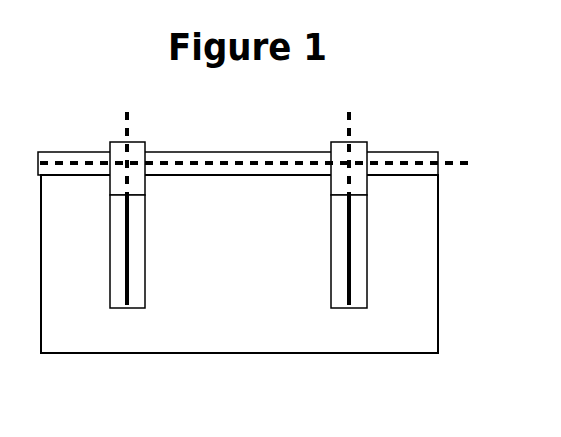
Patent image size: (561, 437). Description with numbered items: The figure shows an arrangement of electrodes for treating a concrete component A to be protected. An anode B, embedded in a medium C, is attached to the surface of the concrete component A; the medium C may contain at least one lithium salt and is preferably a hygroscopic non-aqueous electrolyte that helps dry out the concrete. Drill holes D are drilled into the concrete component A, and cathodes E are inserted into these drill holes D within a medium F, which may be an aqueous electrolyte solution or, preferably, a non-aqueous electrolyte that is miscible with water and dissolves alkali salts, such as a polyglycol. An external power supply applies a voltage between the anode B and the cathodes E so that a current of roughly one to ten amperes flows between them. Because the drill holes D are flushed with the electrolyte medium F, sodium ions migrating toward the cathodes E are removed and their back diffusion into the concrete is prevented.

The concrete component A is at (239, 264).
The anode B is at (273, 159).
The medium C is at (236, 147).
The drill holes D is at (219, 230).
The cathodes E is at (251, 192).
The medium F is at (227, 252).